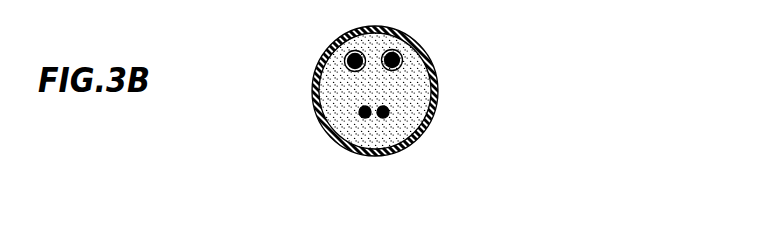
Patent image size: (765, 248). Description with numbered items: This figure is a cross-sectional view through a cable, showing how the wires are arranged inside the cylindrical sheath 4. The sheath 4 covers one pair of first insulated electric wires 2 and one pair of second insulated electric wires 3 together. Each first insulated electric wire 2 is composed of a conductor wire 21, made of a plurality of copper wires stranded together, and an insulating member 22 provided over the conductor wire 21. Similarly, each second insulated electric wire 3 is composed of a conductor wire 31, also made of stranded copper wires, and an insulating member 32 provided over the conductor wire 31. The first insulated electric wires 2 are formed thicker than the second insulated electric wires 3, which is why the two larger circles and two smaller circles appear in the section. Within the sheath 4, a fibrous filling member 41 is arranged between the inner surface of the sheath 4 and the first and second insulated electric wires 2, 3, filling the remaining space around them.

The first insulated electric wire 2 is at (403, 51).
The conductor wire 21 is at (403, 53).
The insulating member 22 is at (402, 63).
The second insulated electric wire 3 is at (377, 167).
The conductor wire 31 is at (367, 118).
The insulating member 32 is at (386, 118).
The sheath 4 is at (402, 27).
The fibrous filling member 41 is at (338, 107).